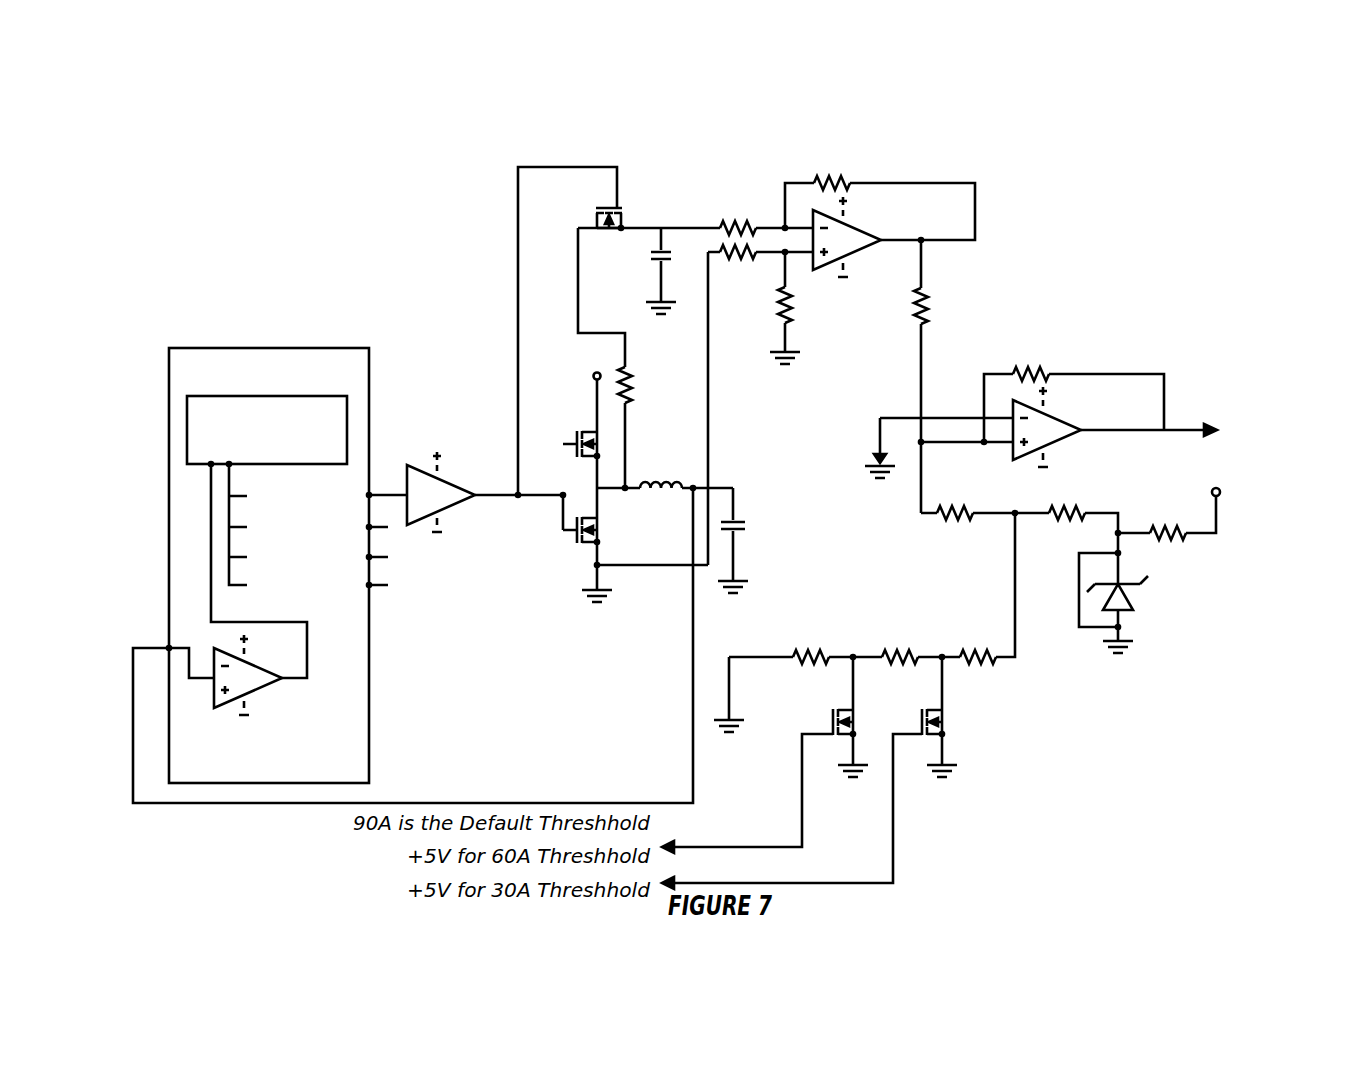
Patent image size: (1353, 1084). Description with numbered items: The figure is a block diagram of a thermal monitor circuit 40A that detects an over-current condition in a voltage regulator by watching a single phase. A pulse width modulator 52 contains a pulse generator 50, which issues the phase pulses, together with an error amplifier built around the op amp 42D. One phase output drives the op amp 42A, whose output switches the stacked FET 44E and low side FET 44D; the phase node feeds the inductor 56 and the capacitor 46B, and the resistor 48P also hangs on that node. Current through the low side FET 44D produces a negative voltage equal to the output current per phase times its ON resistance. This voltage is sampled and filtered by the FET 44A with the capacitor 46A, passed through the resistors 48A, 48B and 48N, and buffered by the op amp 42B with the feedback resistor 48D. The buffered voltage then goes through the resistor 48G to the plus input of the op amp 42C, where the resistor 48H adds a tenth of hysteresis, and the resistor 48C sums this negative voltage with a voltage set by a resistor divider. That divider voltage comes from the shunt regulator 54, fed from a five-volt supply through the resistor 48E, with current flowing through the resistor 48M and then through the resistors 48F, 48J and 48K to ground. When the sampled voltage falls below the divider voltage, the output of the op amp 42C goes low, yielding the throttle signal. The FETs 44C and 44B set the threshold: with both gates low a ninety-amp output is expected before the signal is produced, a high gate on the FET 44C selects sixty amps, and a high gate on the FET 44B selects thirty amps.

The thermal monitor circuit 40A is at (270, 176).
The pulse width modulator 52 is at (323, 348).
The pulse generator 50 is at (307, 396).
The op amp 42A is at (451, 513).
The op amp 42D is at (265, 689).
The FET 44A is at (620, 210).
The capacitor 46A is at (644, 271).
The resistor 48A is at (766, 219).
The resistor 48B is at (760, 265).
The resistor 48D is at (819, 191).
The op amp 42B is at (859, 255).
The resistor 48N is at (805, 308).
The resistor 48G is at (945, 376).
The resistor 48P is at (647, 429).
The FET 44E is at (569, 452).
The low side FET 44D is at (635, 529).
The inductor 56 is at (665, 471).
The capacitor 46B is at (754, 540).
The resistor 48H is at (1074, 394).
The op amp 42C is at (1066, 447).
The resistor 48C is at (985, 501).
The resistor 48M is at (1083, 507).
The resistor 48E is at (1172, 502).
The shunt regulator 54 is at (1151, 566).
The resistor 48K is at (783, 678).
The resistor 48J is at (896, 644).
The resistor 48F is at (977, 588).
The FET 44C is at (779, 755).
The FET 44B is at (824, 773).